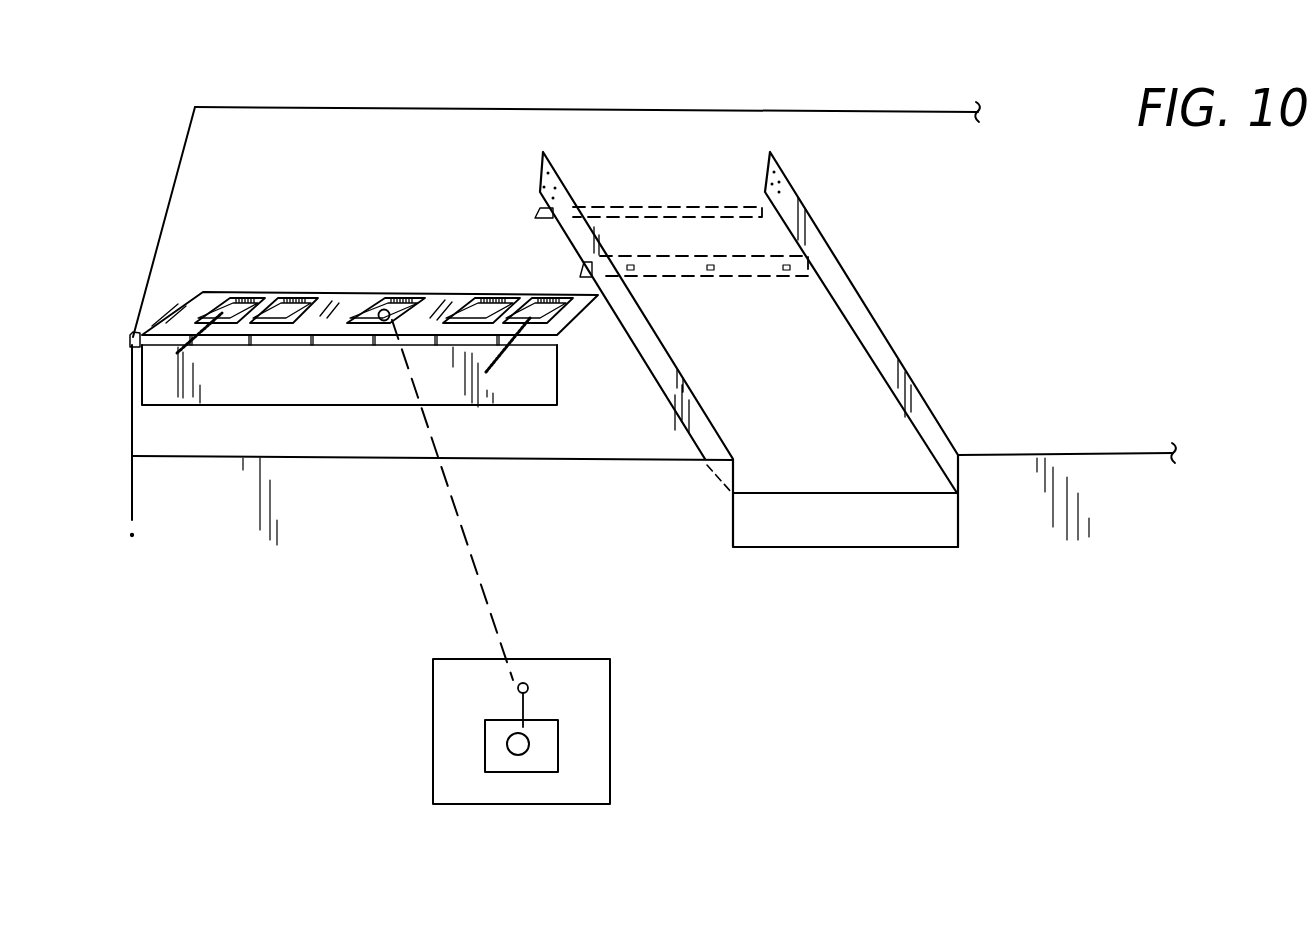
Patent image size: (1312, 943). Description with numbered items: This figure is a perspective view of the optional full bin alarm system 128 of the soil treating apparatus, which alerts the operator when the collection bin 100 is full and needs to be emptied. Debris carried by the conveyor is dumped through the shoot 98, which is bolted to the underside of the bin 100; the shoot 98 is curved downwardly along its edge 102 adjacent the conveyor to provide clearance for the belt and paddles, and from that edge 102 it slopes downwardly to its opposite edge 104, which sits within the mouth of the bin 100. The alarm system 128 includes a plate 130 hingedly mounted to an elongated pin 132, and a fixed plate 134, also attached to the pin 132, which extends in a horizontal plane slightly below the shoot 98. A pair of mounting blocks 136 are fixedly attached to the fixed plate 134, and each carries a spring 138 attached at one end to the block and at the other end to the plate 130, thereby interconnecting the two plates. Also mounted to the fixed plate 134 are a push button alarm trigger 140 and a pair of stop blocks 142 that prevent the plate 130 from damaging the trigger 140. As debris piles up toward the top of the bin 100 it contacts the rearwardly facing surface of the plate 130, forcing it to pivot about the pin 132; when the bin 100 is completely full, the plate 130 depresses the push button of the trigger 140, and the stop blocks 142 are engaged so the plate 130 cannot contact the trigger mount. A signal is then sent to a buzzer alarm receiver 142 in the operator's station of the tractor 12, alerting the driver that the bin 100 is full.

The tractor 12 is at (557, 677).
The shoot 98 is at (843, 337).
The collection bin 100 is at (719, 325).
The edge 102 is at (535, 212).
The opposite edge 104 is at (885, 497).
The alarm system 128 is at (337, 299).
The plate 130 is at (458, 385).
The elongated pin 132 is at (133, 343).
The fixed plate 134 is at (347, 302).
The mounting blocks 136 is at (243, 303).
The springs 138 is at (195, 348).
The push button alarm trigger 140 is at (414, 303).
The stop blocks 142 is at (300, 302).